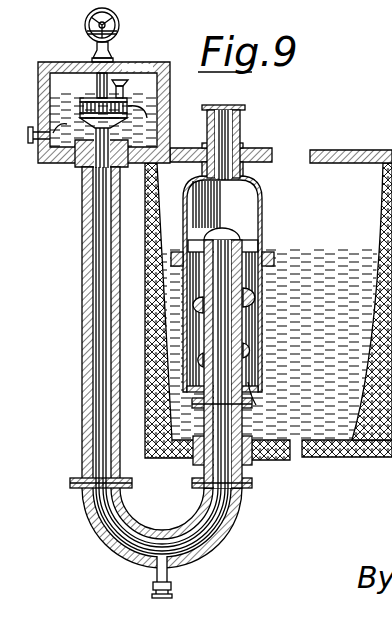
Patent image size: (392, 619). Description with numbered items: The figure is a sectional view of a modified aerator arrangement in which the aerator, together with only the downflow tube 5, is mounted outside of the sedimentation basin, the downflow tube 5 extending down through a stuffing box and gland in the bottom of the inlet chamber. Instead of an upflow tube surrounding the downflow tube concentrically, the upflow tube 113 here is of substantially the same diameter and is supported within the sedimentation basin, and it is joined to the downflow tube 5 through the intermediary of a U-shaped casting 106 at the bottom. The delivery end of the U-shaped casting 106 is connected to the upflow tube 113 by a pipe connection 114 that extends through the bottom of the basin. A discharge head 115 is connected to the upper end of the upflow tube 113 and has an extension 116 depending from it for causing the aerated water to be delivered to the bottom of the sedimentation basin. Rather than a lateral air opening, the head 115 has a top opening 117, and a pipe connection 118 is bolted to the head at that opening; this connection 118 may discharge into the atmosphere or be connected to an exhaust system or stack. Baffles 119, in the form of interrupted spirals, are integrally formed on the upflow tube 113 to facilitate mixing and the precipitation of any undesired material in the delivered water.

The downflow tube 5 is at (96, 185).
The U-shaped casting 106 is at (231, 549).
The upflow tube 113 is at (244, 288).
The pipe connection 114 is at (222, 456).
The discharge head 115 is at (263, 205).
The extension 116 is at (261, 350).
The top opening 117 is at (216, 216).
The pipe connection 118 is at (243, 131).
The baffles 119 is at (259, 306).